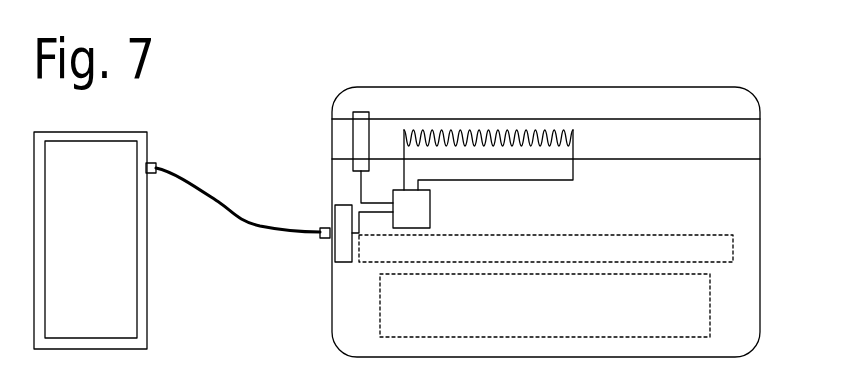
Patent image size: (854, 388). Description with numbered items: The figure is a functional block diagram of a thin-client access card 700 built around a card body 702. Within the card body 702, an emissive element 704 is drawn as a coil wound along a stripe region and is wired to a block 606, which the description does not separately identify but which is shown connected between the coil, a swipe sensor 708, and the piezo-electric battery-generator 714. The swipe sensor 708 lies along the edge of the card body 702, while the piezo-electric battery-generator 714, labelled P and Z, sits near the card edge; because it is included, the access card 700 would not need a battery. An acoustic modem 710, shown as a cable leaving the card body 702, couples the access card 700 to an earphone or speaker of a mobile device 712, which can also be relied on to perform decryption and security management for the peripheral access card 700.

The access card 700 is at (276, 44).
The card body 702 is at (332, 290).
The emissive element 704 is at (573, 131).
The chip / integrated circuit 606 is at (430, 202).
The swipe sensor 708 is at (361, 112).
The acoustic modem 710 is at (226, 206).
The mobile device 712 is at (106, 280).
The piezo-electric battery-generator 714 is at (346, 262).